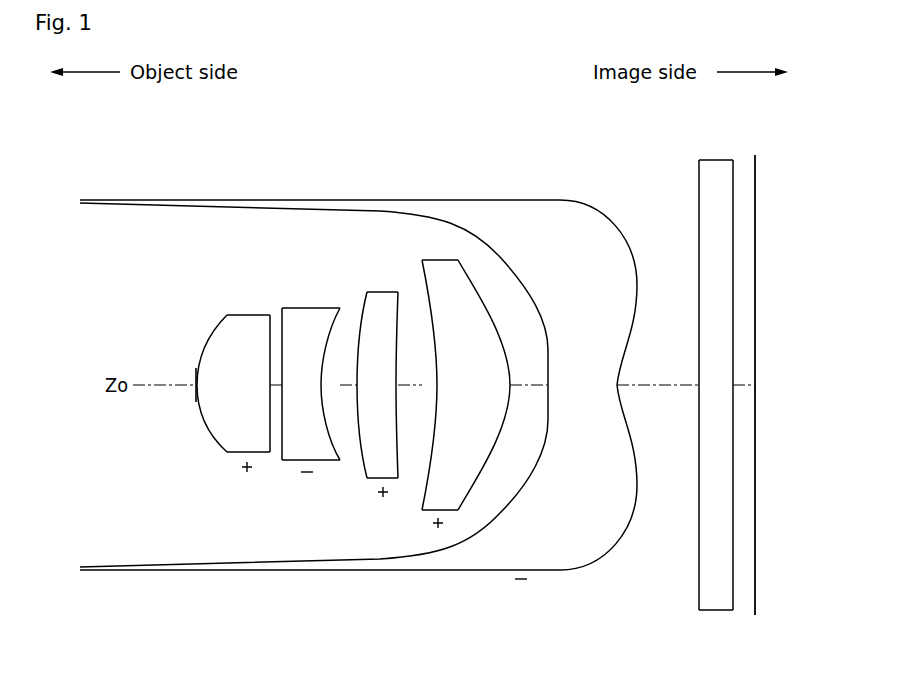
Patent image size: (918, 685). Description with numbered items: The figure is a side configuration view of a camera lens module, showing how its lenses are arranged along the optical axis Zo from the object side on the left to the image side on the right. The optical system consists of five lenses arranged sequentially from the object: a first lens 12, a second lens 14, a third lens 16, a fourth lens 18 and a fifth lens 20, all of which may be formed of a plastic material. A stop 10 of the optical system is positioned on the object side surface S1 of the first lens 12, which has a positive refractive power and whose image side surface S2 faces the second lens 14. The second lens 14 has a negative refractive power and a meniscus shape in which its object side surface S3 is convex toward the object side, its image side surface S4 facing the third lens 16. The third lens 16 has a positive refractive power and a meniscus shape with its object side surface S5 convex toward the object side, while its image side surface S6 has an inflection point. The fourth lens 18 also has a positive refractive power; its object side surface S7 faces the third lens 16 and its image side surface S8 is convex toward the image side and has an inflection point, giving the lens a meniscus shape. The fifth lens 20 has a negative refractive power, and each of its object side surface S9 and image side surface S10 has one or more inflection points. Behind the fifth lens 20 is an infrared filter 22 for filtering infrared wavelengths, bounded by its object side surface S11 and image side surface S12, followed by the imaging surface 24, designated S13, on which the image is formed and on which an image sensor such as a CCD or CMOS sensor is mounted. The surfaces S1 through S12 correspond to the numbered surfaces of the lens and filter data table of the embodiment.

The stop 10 is at (197, 408).
The first lens 12 is at (230, 385).
The second lens 14 is at (313, 389).
The third lens 16 is at (374, 382).
The fourth lens 18 is at (455, 388).
The fifth lens 20 is at (358, 405).
The infrared filter 22 is at (687, 388).
The imaging surface 24 is at (765, 379).
The object side surface of the first lens S1 is at (205, 340).
The image side surface of the first lens S2 is at (270, 318).
The object side surface of the second lens S3 is at (282, 310).
The image side surface of the second lens S4 is at (339, 320).
The object side surface of the third lens S5 is at (366, 297).
The image side surface of the third lens S6 is at (403, 305).
The object side surface of the fourth lens S7 is at (421, 266).
The image side surface of the fourth lens S8 is at (480, 305).
The object side surface of the fifth lens S9 is at (523, 298).
The image side surface of the fifth lens S10 is at (620, 230).
The object side surface of the infrared filter S11 is at (699, 204).
The image side surface of the infrared filter S12 is at (735, 163).
The imaging surface S13 is at (754, 158).